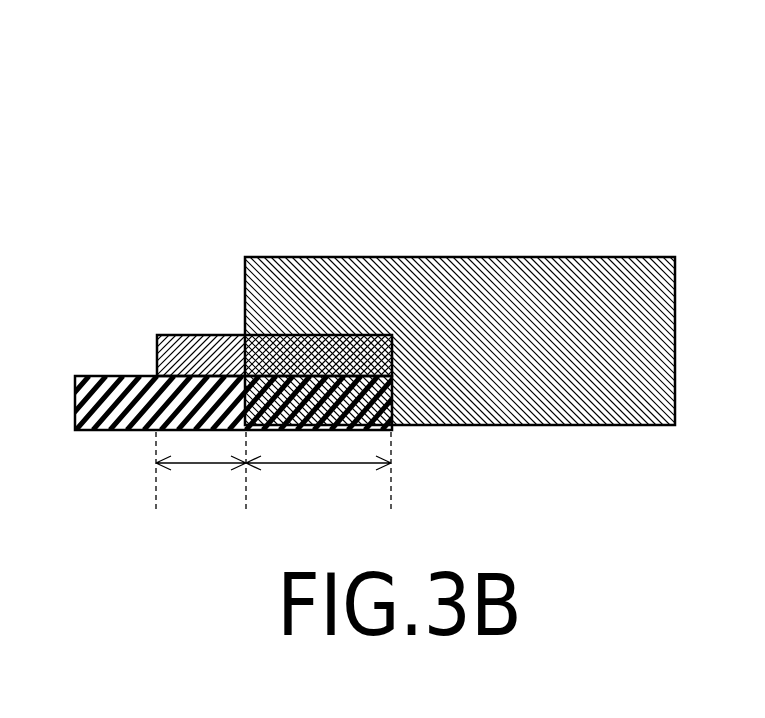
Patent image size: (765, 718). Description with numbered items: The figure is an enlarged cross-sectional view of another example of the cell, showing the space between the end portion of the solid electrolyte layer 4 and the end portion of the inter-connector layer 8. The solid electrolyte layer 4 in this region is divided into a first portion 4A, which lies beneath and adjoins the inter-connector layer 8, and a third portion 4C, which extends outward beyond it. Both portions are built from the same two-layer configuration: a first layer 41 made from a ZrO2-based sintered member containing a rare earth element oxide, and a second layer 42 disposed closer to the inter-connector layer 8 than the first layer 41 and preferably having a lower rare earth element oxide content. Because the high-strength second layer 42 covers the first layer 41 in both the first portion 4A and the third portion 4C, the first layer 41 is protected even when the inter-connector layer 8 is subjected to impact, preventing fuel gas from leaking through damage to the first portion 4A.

The solid electrolyte layer 4 is at (227, 216).
The first layer 41 is at (283, 402).
The second layer 42 is at (332, 345).
The inter-connector layer 8 is at (505, 282).
The third portion 4C is at (201, 480).
The first portion 4A is at (318, 480).